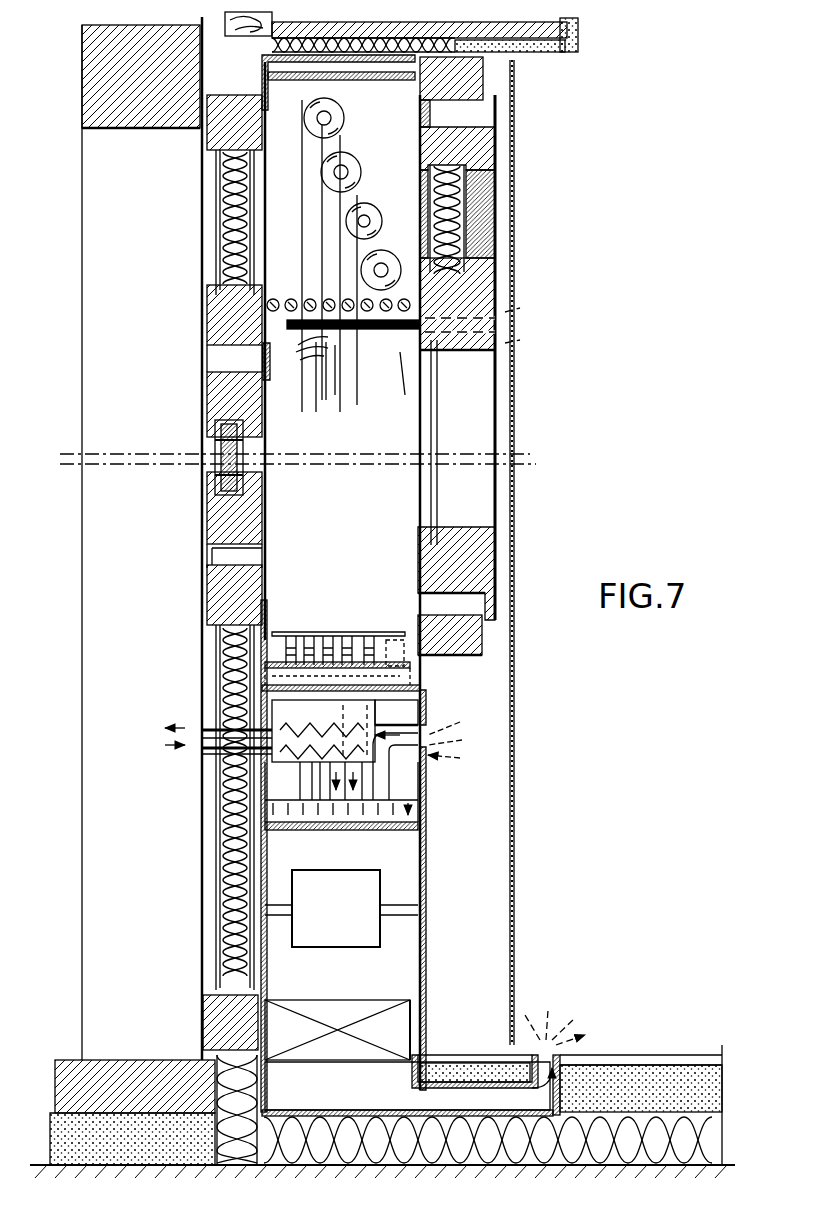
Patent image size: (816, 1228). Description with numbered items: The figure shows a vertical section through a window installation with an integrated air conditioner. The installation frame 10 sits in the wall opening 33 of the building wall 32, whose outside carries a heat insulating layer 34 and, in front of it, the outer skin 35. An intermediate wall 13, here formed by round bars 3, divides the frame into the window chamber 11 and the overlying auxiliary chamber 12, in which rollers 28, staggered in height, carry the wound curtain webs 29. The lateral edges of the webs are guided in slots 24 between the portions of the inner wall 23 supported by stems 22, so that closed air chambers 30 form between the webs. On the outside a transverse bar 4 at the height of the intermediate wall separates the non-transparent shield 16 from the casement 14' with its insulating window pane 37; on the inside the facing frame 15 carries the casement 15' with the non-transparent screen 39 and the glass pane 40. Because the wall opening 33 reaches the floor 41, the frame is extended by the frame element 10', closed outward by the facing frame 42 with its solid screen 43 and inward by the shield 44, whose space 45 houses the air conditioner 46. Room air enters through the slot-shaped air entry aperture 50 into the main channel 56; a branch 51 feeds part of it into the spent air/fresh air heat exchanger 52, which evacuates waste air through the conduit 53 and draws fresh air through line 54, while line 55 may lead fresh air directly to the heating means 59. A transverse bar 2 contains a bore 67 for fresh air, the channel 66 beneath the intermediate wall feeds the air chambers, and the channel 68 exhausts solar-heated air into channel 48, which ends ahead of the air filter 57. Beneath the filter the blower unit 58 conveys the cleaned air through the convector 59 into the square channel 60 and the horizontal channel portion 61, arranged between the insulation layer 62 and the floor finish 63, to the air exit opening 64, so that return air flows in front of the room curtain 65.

The transverse bar 2 is at (493, 282).
The round bars 3 is at (398, 312).
The transverse bar 4 is at (207, 152).
The installation frame 10 is at (311, 82).
The frame element 10' is at (198, 856).
The window chamber 11 is at (352, 545).
The auxiliary chamber 12 is at (292, 188).
The intermediate wall 13 is at (422, 302).
The casement 14' is at (205, 455).
The facing frame 15 is at (487, 356).
The casement 15' is at (489, 373).
The non-transparent shield 16 is at (222, 235).
The stems 22 is at (322, 645).
The inner wall 23 is at (378, 643).
The slots 24 is at (311, 382).
The rollers 28 is at (340, 120).
The curtain webs 29 is at (335, 270).
The air chambers 30 is at (304, 354).
The building wall 32 is at (548, 28).
The wall opening 33 is at (500, 137).
The heat insulating layer 34 is at (256, 38).
The outer skin 35 is at (124, 118).
The window pane 37 is at (215, 470).
The non-transparent screen 39 is at (455, 222).
The glass pane 40 is at (437, 412).
The floor 41 is at (450, 1060).
The facing frame 42 is at (202, 993).
The solid screen 43 is at (235, 835).
The shield 44 is at (425, 752).
The space 45 is at (428, 820).
The air conditioner 46 is at (426, 905).
The channel 48 is at (395, 675).
The air entry aperture 50 is at (433, 740).
The branch 51 is at (396, 712).
The spent air/fresh air heat exchanger 52 is at (292, 708).
The conduit 53 is at (205, 730).
The line 54 is at (205, 750).
The line 55 is at (312, 782).
The main channel 56 is at (410, 755).
The air filter 57 is at (370, 827).
The blower unit 58 is at (318, 935).
The heating means 59 is at (350, 1025).
The square channel 60 is at (372, 1100).
The channel portion 61 is at (450, 1097).
The insulation layer 62 is at (545, 1140).
The floor finish 63 is at (478, 1072).
The air exit opening 64 is at (562, 1019).
The curtain 65 is at (516, 698).
The channel 66 is at (402, 350).
The bore 67 is at (500, 334).
The channel 68 is at (343, 633).